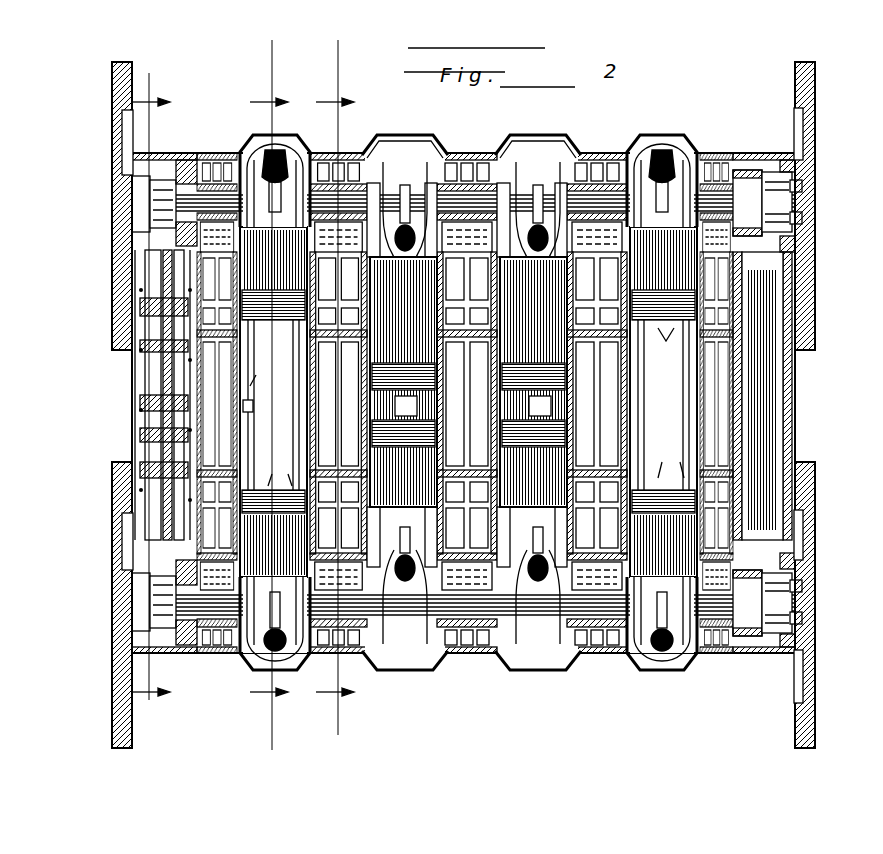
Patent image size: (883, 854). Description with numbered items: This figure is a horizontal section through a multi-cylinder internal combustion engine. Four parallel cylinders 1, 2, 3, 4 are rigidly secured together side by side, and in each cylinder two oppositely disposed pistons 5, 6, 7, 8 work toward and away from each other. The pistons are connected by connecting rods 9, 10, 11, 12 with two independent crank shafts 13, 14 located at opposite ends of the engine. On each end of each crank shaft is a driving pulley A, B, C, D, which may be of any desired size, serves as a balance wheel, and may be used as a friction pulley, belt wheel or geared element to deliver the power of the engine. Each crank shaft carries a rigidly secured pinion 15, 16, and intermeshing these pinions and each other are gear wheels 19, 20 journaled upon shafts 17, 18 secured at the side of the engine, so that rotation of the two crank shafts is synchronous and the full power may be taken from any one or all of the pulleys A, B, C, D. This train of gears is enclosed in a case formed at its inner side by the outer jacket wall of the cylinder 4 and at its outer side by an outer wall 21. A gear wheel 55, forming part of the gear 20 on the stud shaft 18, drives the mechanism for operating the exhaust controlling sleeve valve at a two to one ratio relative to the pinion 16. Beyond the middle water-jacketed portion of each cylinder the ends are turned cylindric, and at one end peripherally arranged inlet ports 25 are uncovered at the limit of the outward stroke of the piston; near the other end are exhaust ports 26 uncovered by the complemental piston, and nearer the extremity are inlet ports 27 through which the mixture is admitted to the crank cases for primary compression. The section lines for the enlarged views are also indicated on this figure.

The cylinder 1 is at (663, 402).
The cylinder 2 is at (540, 405).
The cylinder 3 is at (333, 395).
The cylinder 4 is at (312, 387).
The piston 5 is at (398, 395).
The piston 6 is at (533, 382).
The piston 7 is at (403, 382).
The piston 8 is at (273, 402).
The connecting rod 9 is at (682, 158).
The connecting rod 10 is at (560, 185).
The connecting rod 11 is at (432, 185).
The connecting rod 12 is at (243, 152).
The crank shaft 13 is at (745, 170).
The crank shaft 14 is at (738, 600).
The pinion 15 is at (135, 250).
The pinion 16 is at (170, 655).
The shaft 17 is at (150, 310).
The shaft 18 is at (160, 472).
The gear wheel 19 is at (160, 372).
The gear wheel 20 is at (245, 405).
The outer wall 21 is at (148, 352).
The inlet port 25 is at (465, 357).
The exhaust port 26 is at (476, 461).
The inlet port 27 is at (423, 587).
The gear wheel 55 is at (261, 404).
The driving pulley A is at (815, 130).
The driving pulley B is at (112, 137).
The driving pulley C is at (112, 722).
The driving pulley D is at (815, 712).